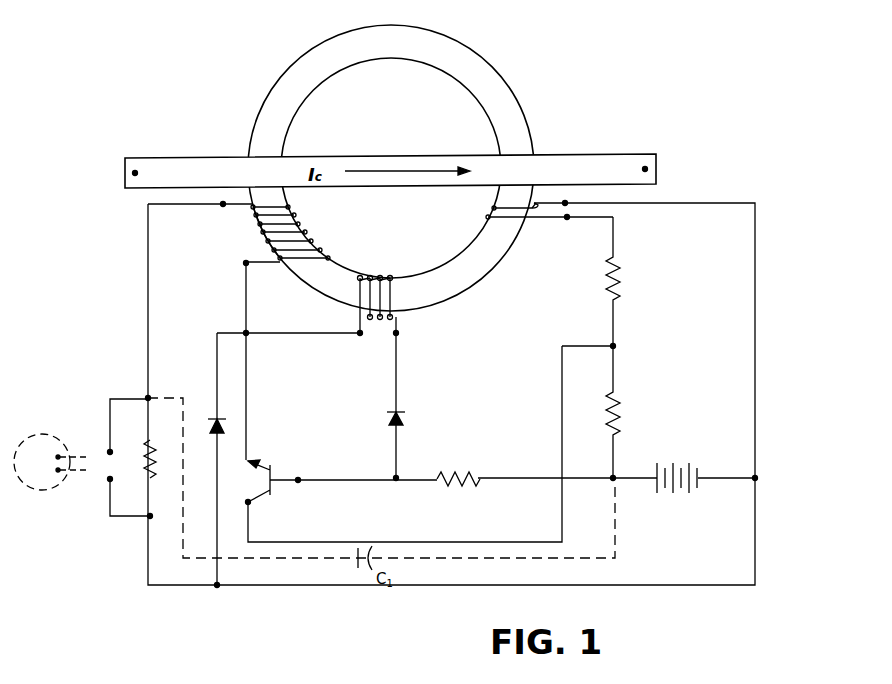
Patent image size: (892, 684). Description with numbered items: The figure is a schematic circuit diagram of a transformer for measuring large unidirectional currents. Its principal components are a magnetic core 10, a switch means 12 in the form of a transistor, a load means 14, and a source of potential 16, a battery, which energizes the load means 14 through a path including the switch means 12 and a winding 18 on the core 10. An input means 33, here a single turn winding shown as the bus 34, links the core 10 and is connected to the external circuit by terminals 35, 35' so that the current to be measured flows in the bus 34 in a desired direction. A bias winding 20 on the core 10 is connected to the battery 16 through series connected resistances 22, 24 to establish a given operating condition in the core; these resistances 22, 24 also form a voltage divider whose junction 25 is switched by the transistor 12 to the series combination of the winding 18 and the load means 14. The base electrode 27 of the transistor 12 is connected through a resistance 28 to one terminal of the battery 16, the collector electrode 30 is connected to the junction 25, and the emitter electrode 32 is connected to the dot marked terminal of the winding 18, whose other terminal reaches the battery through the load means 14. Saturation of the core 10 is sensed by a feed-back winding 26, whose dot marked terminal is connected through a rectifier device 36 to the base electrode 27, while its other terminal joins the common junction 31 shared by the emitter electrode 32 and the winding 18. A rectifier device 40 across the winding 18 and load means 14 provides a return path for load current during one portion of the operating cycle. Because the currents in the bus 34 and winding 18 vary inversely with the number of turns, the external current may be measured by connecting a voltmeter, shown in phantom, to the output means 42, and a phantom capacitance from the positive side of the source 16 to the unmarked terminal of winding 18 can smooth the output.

The magnetic core 10 is at (484, 68).
The switch means 12 is at (284, 466).
The load means 14 is at (148, 448).
The source of potential 16 is at (692, 458).
The winding 18 is at (260, 232).
The bias winding 20 is at (490, 216).
The resistance 22 is at (620, 292).
The resistance 24 is at (620, 412).
The junction 25 is at (615, 346).
The feed-back winding 26 is at (384, 276).
The base electrode 27 is at (290, 482).
The resistance 28 is at (456, 474).
The collector electrode 30 is at (252, 502).
The common junction 31 is at (246, 334).
The emitter electrode 32 is at (252, 466).
The input means 33 is at (232, 133).
The bus 34 is at (397, 157).
The terminal 35 is at (145, 153).
The terminal 35' is at (669, 161).
The rectifier device 36 is at (404, 416).
The rectifier device 40 is at (213, 416).
The output means 42 is at (90, 438).